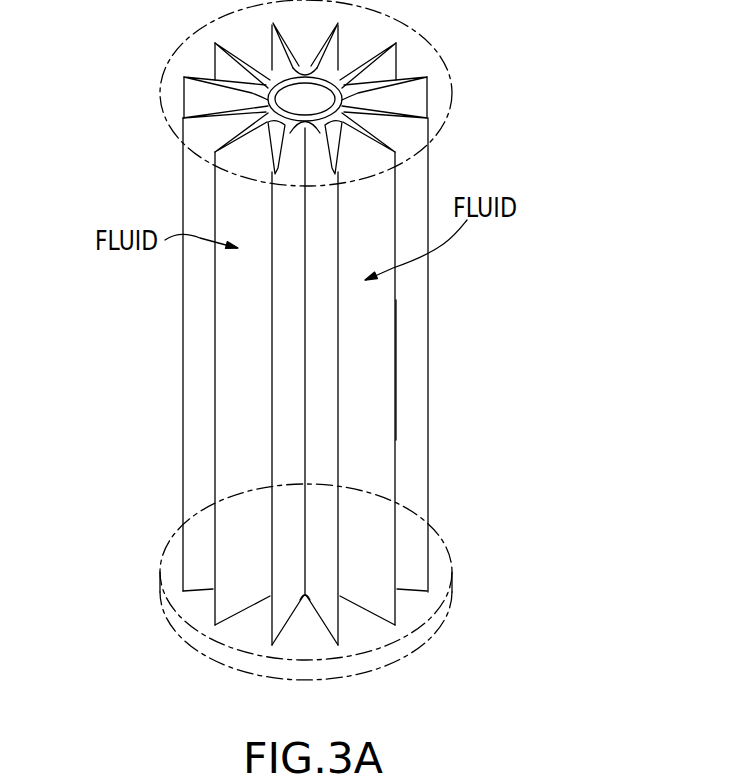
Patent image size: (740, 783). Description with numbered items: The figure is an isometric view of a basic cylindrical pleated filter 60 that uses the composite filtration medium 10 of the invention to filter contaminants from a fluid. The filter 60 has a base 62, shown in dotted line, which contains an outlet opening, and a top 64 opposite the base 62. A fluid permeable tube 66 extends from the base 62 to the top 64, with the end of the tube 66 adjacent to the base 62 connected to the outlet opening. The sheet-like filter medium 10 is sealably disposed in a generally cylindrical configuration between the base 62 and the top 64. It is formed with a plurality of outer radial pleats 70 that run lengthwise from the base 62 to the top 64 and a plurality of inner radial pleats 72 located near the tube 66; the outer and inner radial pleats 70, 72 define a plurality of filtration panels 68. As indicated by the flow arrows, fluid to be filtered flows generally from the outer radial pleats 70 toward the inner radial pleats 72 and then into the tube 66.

The composite filtration medium 10 is at (386, 464).
The cylindrical pleated filter 60 is at (347, 364).
The base 62 is at (452, 588).
The top 64 is at (424, 31).
The fluid permeable tube 66 is at (320, 111).
The filtration panels 68 is at (256, 547).
The outer radial pleats 70 is at (432, 458).
The inner radial pleats 72 is at (307, 565).